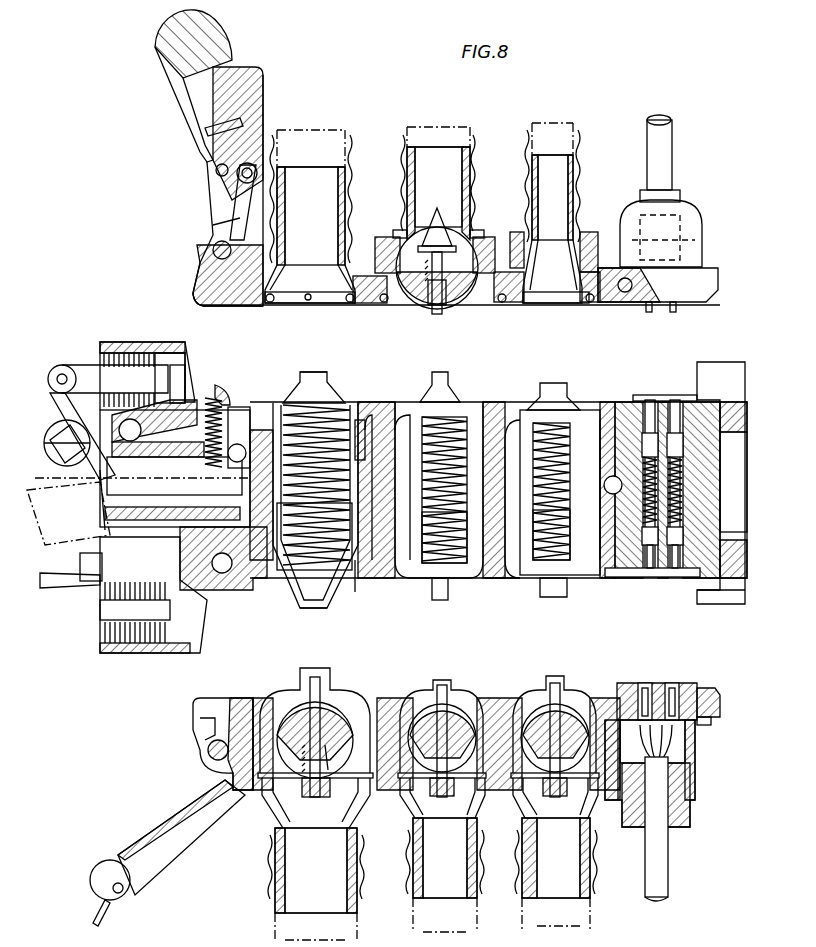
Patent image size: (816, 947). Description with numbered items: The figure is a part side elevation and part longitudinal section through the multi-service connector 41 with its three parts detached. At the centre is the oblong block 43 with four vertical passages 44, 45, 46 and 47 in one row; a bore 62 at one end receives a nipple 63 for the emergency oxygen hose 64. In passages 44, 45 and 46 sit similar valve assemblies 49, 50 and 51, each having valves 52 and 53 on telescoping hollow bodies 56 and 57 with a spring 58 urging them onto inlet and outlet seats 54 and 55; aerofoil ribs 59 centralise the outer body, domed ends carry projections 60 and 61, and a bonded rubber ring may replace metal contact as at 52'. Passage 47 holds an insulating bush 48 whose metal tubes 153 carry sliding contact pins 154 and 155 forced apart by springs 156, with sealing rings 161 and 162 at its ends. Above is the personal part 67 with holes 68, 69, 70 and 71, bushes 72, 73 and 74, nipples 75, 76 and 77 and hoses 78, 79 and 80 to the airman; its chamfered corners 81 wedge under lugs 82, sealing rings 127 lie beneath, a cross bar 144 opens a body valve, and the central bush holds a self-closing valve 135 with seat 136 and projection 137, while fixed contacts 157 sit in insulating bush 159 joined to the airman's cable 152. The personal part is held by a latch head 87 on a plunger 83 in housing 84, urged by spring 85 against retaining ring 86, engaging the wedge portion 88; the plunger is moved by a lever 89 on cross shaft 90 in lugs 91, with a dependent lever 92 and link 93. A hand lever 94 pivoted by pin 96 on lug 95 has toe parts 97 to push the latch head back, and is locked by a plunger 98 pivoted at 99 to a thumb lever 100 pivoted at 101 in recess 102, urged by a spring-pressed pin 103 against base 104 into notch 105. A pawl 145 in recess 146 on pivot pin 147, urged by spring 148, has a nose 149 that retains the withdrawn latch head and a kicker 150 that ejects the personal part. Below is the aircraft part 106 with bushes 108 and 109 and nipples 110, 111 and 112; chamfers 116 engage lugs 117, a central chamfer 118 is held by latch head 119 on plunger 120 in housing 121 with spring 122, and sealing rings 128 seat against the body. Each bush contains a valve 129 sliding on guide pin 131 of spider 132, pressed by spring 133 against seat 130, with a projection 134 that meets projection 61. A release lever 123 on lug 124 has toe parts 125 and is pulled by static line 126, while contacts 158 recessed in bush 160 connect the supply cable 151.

The multi-service connector 41 is at (740, 540).
The connector body block 43 is at (735, 500).
The passage 44 is at (276, 410).
The passage 45 is at (472, 415).
The passage 46 is at (568, 410).
The passage 47 is at (735, 412).
The insulating bush 48 is at (650, 405).
The valve assembly 49 is at (380, 470).
The valve assembly 50 is at (510, 420).
The valve assembly 51 is at (592, 420).
The valve 52 is at (309, 356).
The sealing ring 52' is at (553, 468).
The valve 53 is at (295, 592).
The valve seat 54 is at (360, 420).
The valve seat 55 is at (355, 582).
The hollow cylindrical body 56 is at (174, 480).
The outer hollow valve body 57 is at (248, 585).
The helical compression spring 58 is at (345, 400).
The ribs 59 is at (222, 575).
The axial projection 60 is at (322, 375).
The axial projection 61 is at (330, 598).
The bore 62 is at (255, 490).
The tubular nipple 63 is at (102, 505).
The flexible hose 64 is at (80, 560).
The personal part 67 is at (622, 293).
The hole 68 is at (292, 288).
The hole 69 is at (516, 235).
The hole 70 is at (594, 260).
The hole 71 is at (648, 306).
The tubular bush 72 is at (360, 275).
The tubular bush 73 is at (487, 232).
The tubular bush 74 is at (540, 258).
The tubular nipple 75 is at (343, 178).
The tubular nipple 76 is at (470, 165).
The tubular nipple 77 is at (574, 172).
The hose 78 is at (280, 150).
The hose 79 is at (410, 145).
The hose 80 is at (530, 140).
The chamfered front corner 81 is at (705, 275).
The overhanging lug 82 is at (738, 375).
The plunger 83 is at (95, 375).
The housing 84 is at (125, 343).
The compression spring 85 is at (150, 343).
The spring retaining ring 86 is at (104, 355).
The latch head 87 is at (188, 343).
The chamfered wedge-like portion 88 is at (215, 306).
The lever 89 is at (50, 370).
The cross shaft 90 is at (50, 430).
The lugs 91 is at (140, 469).
The dependent lever 92 is at (68, 513).
The link 93 is at (50, 588).
The hand lever 94 is at (205, 30).
The upstanding central lug 95 is at (205, 266).
The transverse pivot pin 96 is at (213, 249).
The toe parts 97 is at (197, 296).
The plunger 98 is at (236, 195).
The pivot 99 is at (242, 172).
The thumb lever 100 is at (262, 90).
The pivot 101 is at (218, 166).
The longitudinal recess 102 is at (245, 68).
The spring-pressed pin 103 is at (210, 128).
The base of recess 104 is at (190, 85).
The notch 105 is at (220, 235).
The aircraft part 106 is at (618, 800).
The tubular bush 108 is at (400, 790).
The tubular bush 109 is at (513, 790).
The tubular nipple 110 is at (275, 880).
The tubular nipple 111 is at (420, 885).
The tubular nipple 112 is at (535, 885).
The chamfered portion 116 is at (718, 702).
The overhanging lug 117 is at (712, 722).
The central chamfered portion 118 is at (210, 700).
The latch head 119 is at (195, 620).
The plunger 120 is at (100, 607).
The housing 121 is at (100, 650).
The compression spring 122 is at (130, 585).
The latch release lever 123 is at (170, 845).
The dependent lug 124 is at (207, 750).
The toe parts 125 is at (205, 722).
The flexible static line 126 is at (100, 920).
The sealing rings 127 is at (382, 305).
The sealing rings 128 is at (503, 580).
The valve 129 is at (338, 730).
The annular valve seat 130 is at (285, 700).
The central guide pin 131 is at (345, 705).
The apertured spider 132 is at (340, 790).
The compression spring 133 is at (303, 757).
The upstanding central projection 134 is at (322, 680).
The valve 135 is at (415, 300).
The valve seat 136 is at (455, 300).
The projection 137 is at (440, 318).
The cross bar 144 is at (318, 305).
The latch-retaining pawl 145 is at (155, 460).
The recess 146 is at (50, 445).
The pivot pin 147 is at (52, 396).
The compression spring 148 is at (240, 445).
The nose 149 is at (180, 405).
The kicker extension 150 is at (222, 398).
The supply cable 151 is at (645, 885).
The airman's cable 152 is at (668, 165).
The metal tube 153 is at (745, 592).
The contact pin 154 is at (683, 445).
The contact pin 155 is at (645, 578).
The compression spring 156 is at (683, 480).
The fixed contact pins 157 is at (678, 306).
The fixed contact pins 158 is at (685, 690).
The insulating bush 159 is at (690, 258).
The insulating bush 160 is at (697, 730).
The sealing ring 161 is at (620, 405).
The sealing ring 162 is at (680, 578).